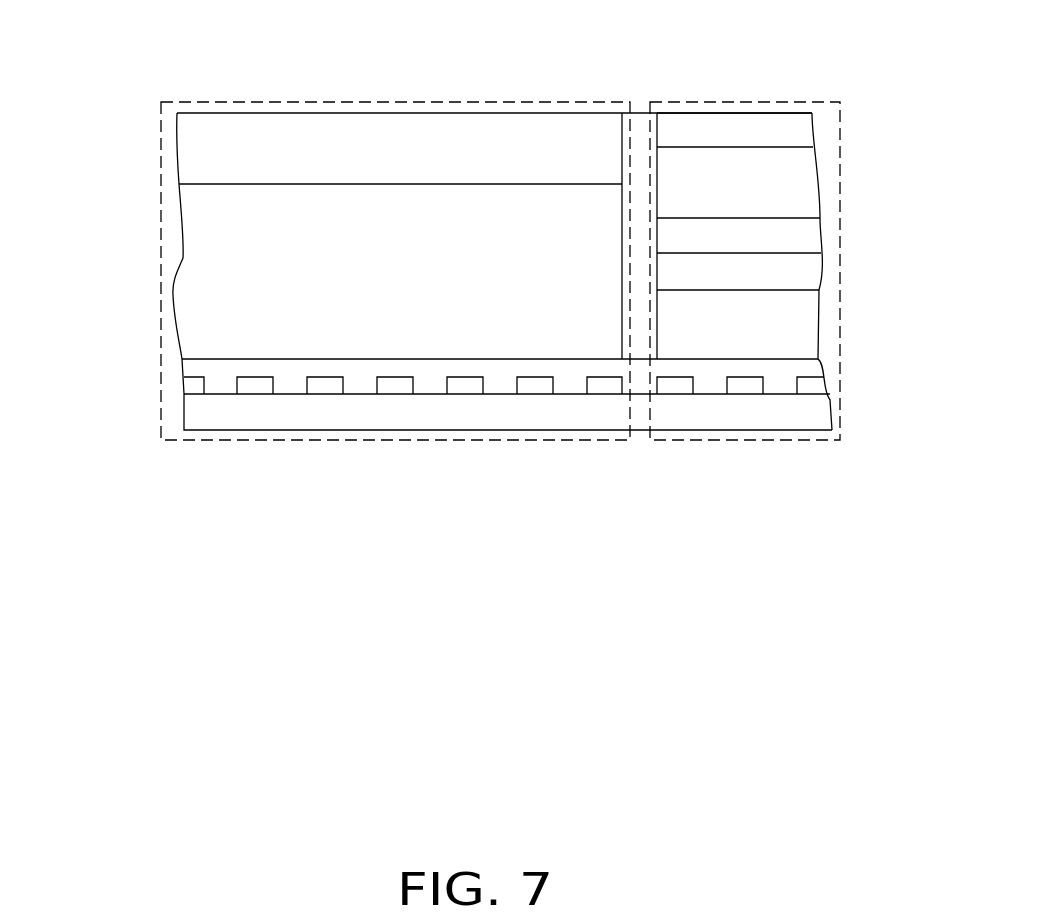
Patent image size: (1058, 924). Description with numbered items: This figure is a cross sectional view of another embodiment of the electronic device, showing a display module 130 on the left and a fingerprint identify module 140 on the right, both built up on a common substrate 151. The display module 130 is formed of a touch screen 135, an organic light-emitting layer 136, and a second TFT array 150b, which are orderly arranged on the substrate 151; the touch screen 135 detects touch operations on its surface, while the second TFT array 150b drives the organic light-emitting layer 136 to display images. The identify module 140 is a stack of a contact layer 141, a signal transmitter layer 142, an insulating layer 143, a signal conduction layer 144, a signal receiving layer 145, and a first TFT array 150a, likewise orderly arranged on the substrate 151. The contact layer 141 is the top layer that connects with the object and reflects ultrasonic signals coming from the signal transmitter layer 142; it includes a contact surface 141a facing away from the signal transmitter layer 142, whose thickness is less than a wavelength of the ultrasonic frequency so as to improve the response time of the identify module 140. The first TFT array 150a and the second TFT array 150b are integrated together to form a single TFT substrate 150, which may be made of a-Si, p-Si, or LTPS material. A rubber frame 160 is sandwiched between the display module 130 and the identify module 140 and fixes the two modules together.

The display module 130 is at (277, 101).
The touch screen 135 is at (210, 165).
The organic light-emitting layer 136 is at (210, 274).
The identify module 140 is at (725, 101).
The contact layer 141 is at (800, 125).
The contact surface 141a is at (787, 113).
The signal transmitter layer 142 is at (800, 173).
The insulating layer 143 is at (800, 228).
The signal conduction layer 144 is at (800, 263).
The signal receiving layer 145 is at (800, 313).
The TFT substrate 150 is at (504, 466).
The first TFT array 150a is at (781, 384).
The second TFT array 150b is at (422, 383).
The substrate 151 is at (800, 400).
The rubber frame 160 is at (640, 127).